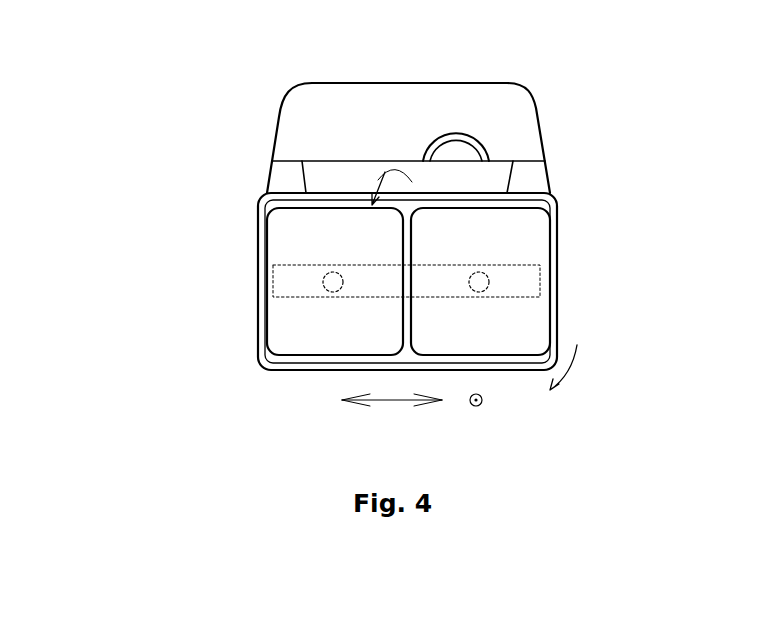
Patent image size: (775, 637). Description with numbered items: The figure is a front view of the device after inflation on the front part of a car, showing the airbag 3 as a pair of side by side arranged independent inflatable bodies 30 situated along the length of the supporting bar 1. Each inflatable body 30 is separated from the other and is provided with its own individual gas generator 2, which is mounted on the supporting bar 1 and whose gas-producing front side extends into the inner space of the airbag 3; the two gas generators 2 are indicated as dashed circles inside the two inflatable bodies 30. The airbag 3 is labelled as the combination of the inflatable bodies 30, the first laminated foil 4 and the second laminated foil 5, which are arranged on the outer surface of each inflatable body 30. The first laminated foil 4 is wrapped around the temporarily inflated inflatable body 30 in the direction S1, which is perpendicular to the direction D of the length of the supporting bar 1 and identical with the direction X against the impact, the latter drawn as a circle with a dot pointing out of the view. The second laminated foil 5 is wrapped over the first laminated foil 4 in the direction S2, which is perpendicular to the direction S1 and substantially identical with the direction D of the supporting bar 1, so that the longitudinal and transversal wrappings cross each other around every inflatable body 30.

The supporting bar 1 is at (283, 288).
The gas generator 2 is at (331, 288).
The airbag 3 is at (448, 204).
The first laminated foil 4 is at (287, 200).
The second laminated foil 5 is at (295, 192).
The inflatable body 30 is at (283, 245).
The direction of wrapping of the first laminated foil S1 is at (385, 172).
The direction of wrapping of the second laminated foil S2 is at (576, 375).
The direction of the length of the supporting bar D is at (392, 417).
The direction against the impact X is at (478, 416).